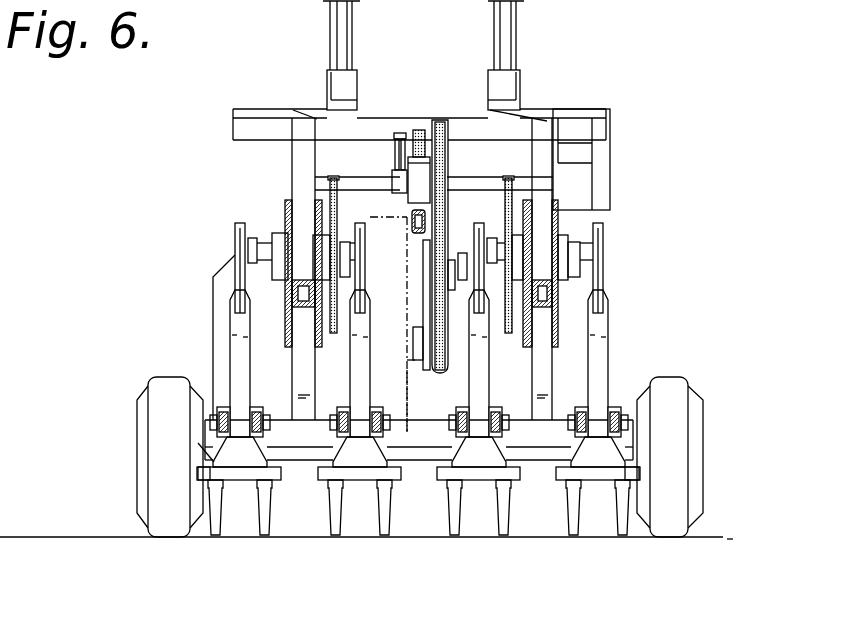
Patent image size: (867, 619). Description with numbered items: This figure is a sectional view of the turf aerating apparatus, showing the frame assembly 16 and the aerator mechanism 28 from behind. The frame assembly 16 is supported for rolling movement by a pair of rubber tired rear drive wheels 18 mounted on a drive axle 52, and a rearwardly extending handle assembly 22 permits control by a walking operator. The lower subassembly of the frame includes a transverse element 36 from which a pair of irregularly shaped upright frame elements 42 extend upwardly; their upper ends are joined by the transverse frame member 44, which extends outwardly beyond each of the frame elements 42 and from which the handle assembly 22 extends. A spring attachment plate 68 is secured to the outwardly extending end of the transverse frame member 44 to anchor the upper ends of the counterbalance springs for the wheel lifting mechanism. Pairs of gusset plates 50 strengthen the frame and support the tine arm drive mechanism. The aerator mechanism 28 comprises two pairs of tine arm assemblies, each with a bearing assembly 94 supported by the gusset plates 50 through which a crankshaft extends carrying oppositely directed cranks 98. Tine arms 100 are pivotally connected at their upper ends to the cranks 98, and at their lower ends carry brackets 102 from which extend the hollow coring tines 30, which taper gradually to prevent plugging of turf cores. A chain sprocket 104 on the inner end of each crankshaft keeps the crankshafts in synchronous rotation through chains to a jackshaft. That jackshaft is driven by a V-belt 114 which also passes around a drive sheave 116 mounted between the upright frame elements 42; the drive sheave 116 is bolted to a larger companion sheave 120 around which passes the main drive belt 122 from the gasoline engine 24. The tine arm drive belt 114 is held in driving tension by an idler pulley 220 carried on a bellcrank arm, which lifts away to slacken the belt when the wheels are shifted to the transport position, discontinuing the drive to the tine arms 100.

The frame assembly 16 is at (420, 432).
The rear drive wheels 18 is at (143, 389).
The handle assembly 22 is at (337, 32).
The gasoline engine 24 is at (394, 324).
The aerator mechanism 28 is at (603, 248).
The hollow coring tines 30 is at (419, 529).
The transverse element 36 is at (393, 428).
The upright frame elements 42 is at (310, 389).
The transverse frame member 44 is at (240, 127).
The gusset plates 50 is at (313, 210).
The drive axle 52 is at (297, 467).
The spring attachment plate 68 is at (583, 153).
The bearing assembly 94 is at (298, 237).
The cranks 98 is at (247, 287).
The tine arms 100 is at (230, 329).
The brackets 102 is at (227, 457).
The chain sprocket 104 is at (333, 180).
The V-belt 114 is at (423, 130).
The drive sheave 116 is at (417, 130).
The companion sheave 120 is at (450, 133).
The main drive belt 122 is at (440, 127).
The idler pulley 220 is at (392, 161).